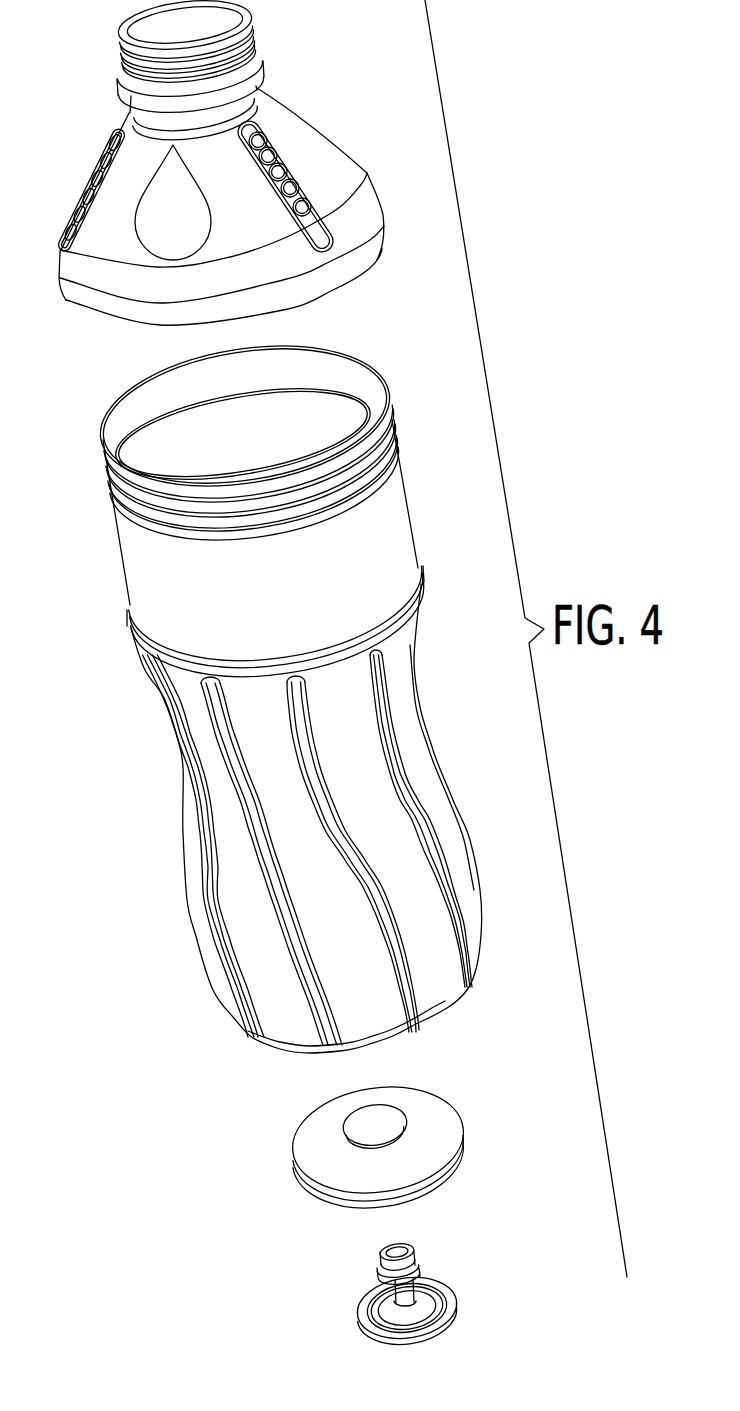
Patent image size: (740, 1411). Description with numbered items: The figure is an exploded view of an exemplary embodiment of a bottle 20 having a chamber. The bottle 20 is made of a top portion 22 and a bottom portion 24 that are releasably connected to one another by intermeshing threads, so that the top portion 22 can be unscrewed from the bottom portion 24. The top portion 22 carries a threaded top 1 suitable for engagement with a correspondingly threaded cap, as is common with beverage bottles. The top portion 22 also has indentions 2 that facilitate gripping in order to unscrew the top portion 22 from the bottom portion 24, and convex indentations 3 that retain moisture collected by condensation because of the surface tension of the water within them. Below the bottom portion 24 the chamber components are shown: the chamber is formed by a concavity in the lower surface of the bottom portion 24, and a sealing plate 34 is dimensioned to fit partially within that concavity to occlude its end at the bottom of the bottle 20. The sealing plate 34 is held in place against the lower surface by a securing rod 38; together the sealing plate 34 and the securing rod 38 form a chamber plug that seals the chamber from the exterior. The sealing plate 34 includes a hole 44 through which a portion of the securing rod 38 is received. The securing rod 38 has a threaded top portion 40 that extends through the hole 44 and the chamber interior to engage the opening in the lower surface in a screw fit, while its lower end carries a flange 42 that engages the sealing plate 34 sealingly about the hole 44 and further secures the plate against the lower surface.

The threaded top 1 is at (244, 22).
The indentions 2 is at (160, 172).
The convex indentations 3 is at (90, 174).
The bottle 20 is at (287, 671).
The top portion 22 is at (220, 162).
The bottom portion 24 is at (402, 533).
The sealing plate 34 is at (408, 1147).
The securing rod 38 is at (461, 1290).
The threaded top portion 40 is at (413, 1250).
The flange 42 is at (443, 1317).
The hole 44 is at (380, 1113).